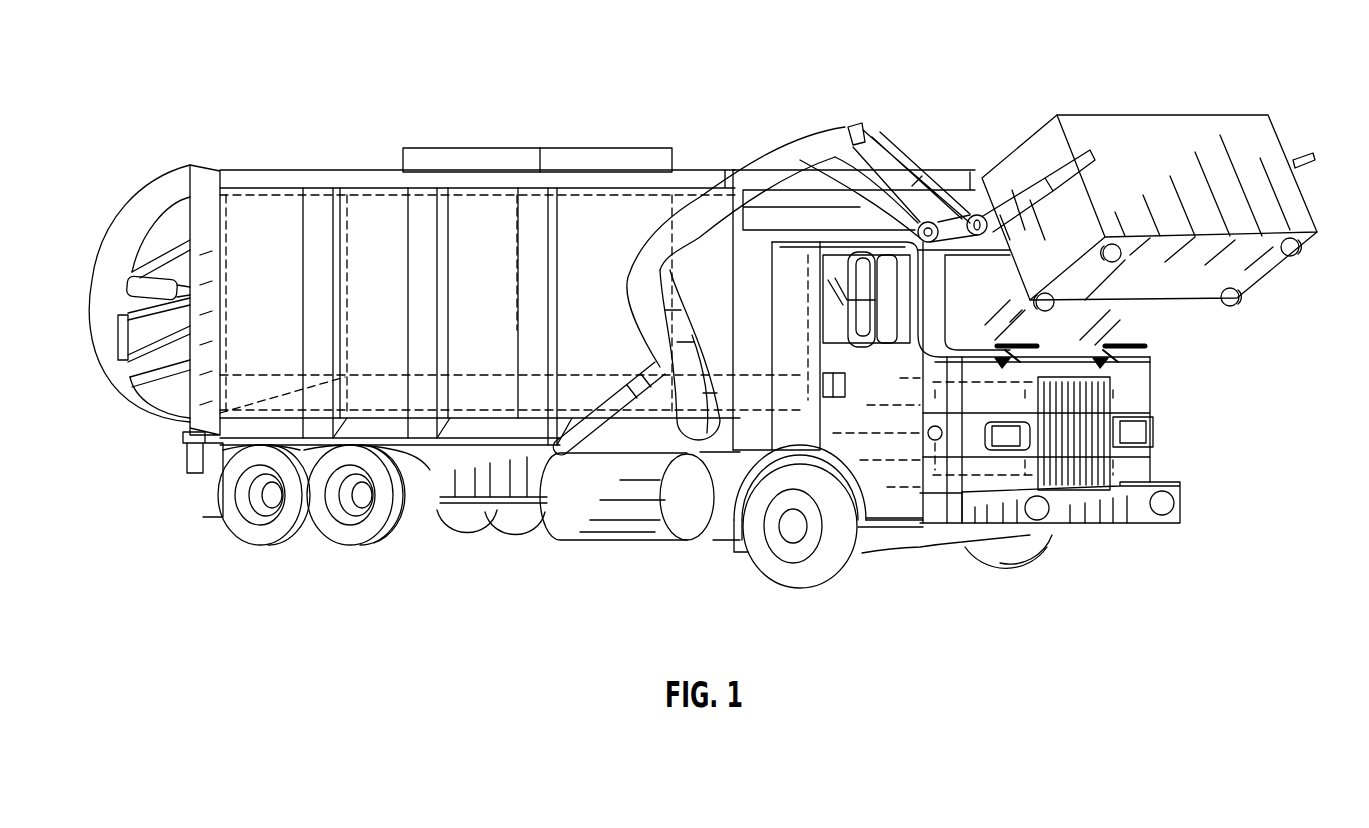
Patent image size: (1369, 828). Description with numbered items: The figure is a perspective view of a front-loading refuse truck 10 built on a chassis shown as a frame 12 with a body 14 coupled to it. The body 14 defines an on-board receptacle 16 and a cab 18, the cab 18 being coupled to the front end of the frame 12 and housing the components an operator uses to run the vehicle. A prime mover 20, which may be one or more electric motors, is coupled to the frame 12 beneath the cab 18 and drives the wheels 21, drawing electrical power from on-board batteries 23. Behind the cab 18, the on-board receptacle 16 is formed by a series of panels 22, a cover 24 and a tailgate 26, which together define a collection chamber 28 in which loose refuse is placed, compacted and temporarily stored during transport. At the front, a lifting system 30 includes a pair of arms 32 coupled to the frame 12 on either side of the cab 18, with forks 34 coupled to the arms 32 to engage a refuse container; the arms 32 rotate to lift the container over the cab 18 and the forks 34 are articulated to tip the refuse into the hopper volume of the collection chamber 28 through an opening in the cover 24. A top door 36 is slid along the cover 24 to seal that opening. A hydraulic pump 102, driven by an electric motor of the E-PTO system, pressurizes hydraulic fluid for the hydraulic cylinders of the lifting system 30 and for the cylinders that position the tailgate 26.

The refuse truck 10 is at (700, 320).
The frame 12 is at (490, 515).
The body 14 is at (496, 263).
The on-board receptacle 16 is at (288, 170).
The cab 18 is at (1127, 317).
The prime mover 20 is at (983, 465).
The wheels 21 is at (248, 528).
The panels 22 is at (240, 357).
The batteries 23 is at (1072, 437).
The cover 24 is at (580, 187).
The tailgate 26 is at (136, 309).
The collection chamber 28 is at (602, 243).
The lifting system 30 is at (961, 259).
The arms 32 is at (815, 147).
The forks 34 is at (1050, 150).
The top door 36 is at (470, 150).
The hydraulic pump 102 is at (1187, 153).